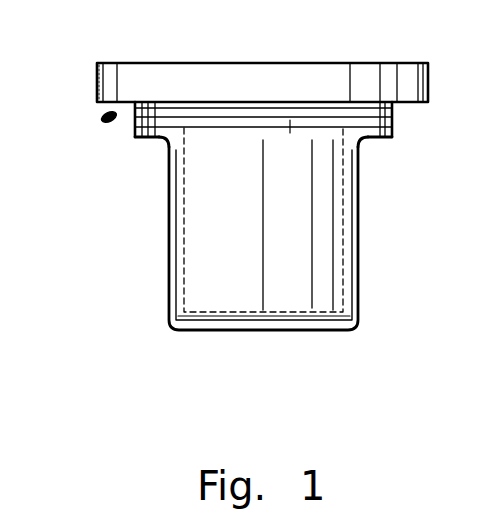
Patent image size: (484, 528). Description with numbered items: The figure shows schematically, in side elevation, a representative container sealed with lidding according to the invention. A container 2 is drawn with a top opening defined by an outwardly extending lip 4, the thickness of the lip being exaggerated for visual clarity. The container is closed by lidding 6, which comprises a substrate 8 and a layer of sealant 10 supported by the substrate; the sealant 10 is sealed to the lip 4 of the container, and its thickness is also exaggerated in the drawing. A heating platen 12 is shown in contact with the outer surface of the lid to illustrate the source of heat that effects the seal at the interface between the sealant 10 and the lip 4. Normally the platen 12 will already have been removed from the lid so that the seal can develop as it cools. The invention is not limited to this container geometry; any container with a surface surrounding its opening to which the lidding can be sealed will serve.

The container 2 is at (358, 232).
The outwardly extending lip 4 is at (382, 138).
The lidding 6 is at (104, 120).
The substrate 8 is at (393, 112).
The layer of sealant 10 is at (393, 122).
The heating platen 12 is at (97, 77).